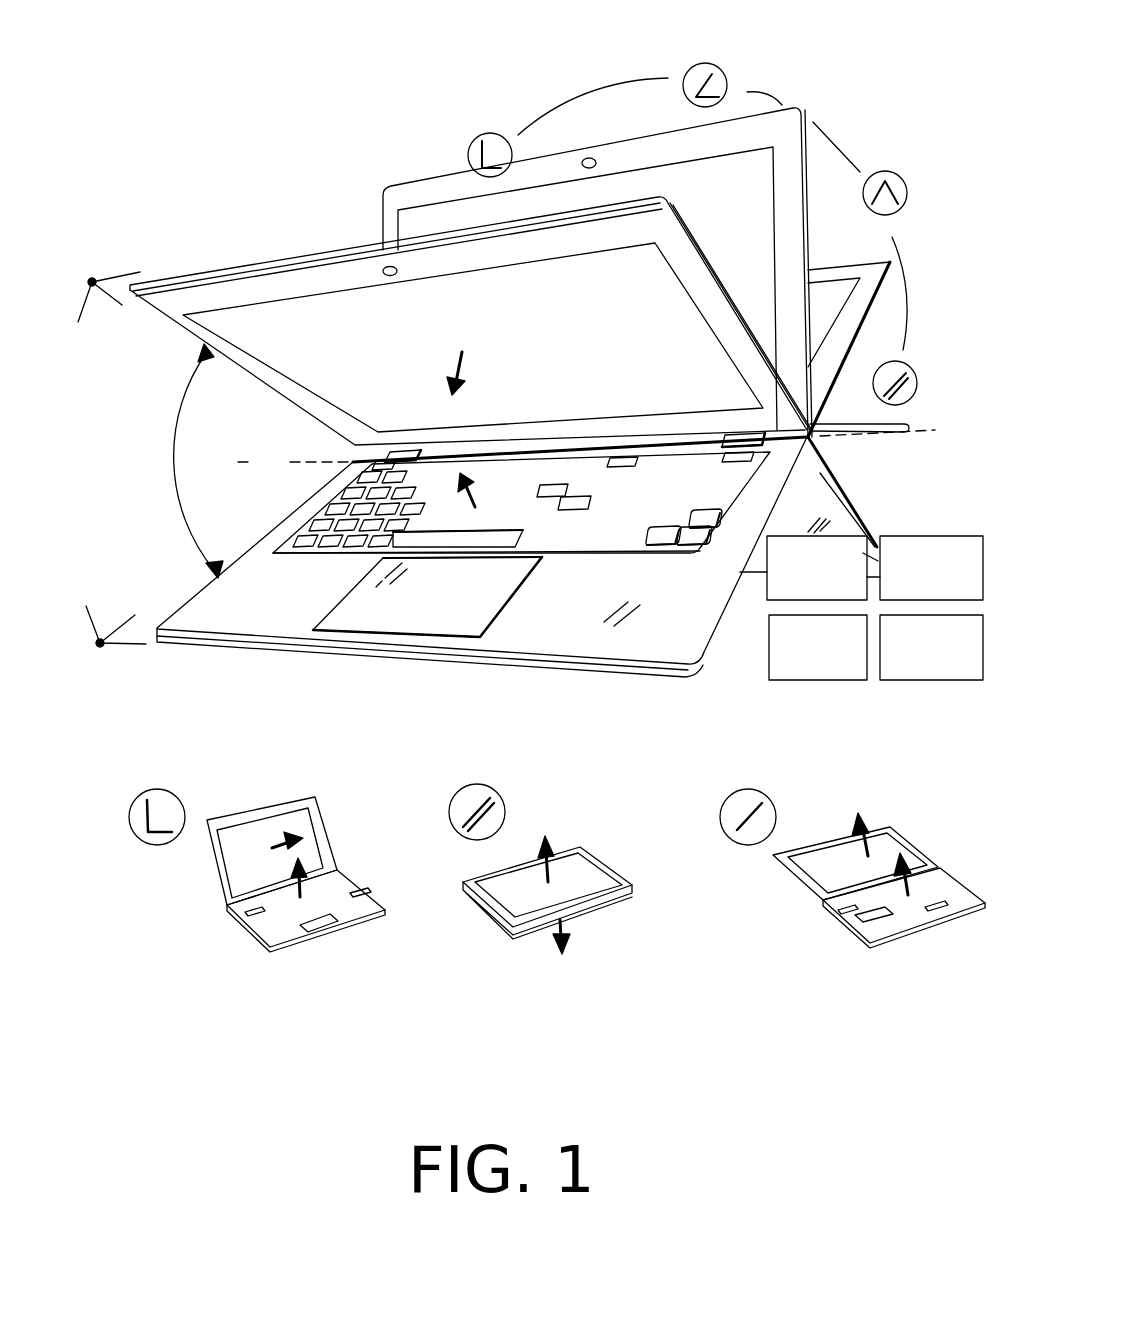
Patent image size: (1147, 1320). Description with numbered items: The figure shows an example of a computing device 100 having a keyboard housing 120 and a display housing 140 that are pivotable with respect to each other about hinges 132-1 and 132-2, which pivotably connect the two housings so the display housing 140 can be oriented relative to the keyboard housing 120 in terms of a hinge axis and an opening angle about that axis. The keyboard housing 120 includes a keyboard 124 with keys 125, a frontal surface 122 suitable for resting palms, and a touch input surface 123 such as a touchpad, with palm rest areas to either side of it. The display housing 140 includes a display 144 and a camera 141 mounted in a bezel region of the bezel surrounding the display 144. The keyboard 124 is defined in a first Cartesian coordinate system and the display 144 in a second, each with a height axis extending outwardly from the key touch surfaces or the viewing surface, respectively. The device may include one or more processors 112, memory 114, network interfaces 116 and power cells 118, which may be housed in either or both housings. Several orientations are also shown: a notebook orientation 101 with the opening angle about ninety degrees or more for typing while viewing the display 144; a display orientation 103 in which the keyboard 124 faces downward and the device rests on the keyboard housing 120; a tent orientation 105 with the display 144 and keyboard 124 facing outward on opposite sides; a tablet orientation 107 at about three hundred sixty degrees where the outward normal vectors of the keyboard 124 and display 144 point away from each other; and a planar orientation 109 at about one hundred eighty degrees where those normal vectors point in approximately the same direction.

The computing device 100 is at (298, 148).
The notebook orientation 101 is at (469, 138).
The display orientation 103 is at (686, 68).
The tent orientation 105 is at (905, 175).
The tablet orientation 107 is at (911, 366).
The planar orientation 109 is at (722, 800).
The processor 112 is at (799, 593).
The memory 114 is at (913, 593).
The network interface 116 is at (800, 672).
The power cell 118 is at (913, 672).
The keyboard housing 120 is at (229, 652).
The frontal surface 122 is at (595, 601).
The touch input surface 123 is at (464, 607).
The keyboard 124 is at (671, 507).
The key 125 is at (660, 548).
The hinge 132-1 is at (400, 448).
The hinge 132-2 is at (735, 432).
The display housing 140 is at (222, 272).
The camera 141 is at (390, 281).
The display 144 is at (610, 340).